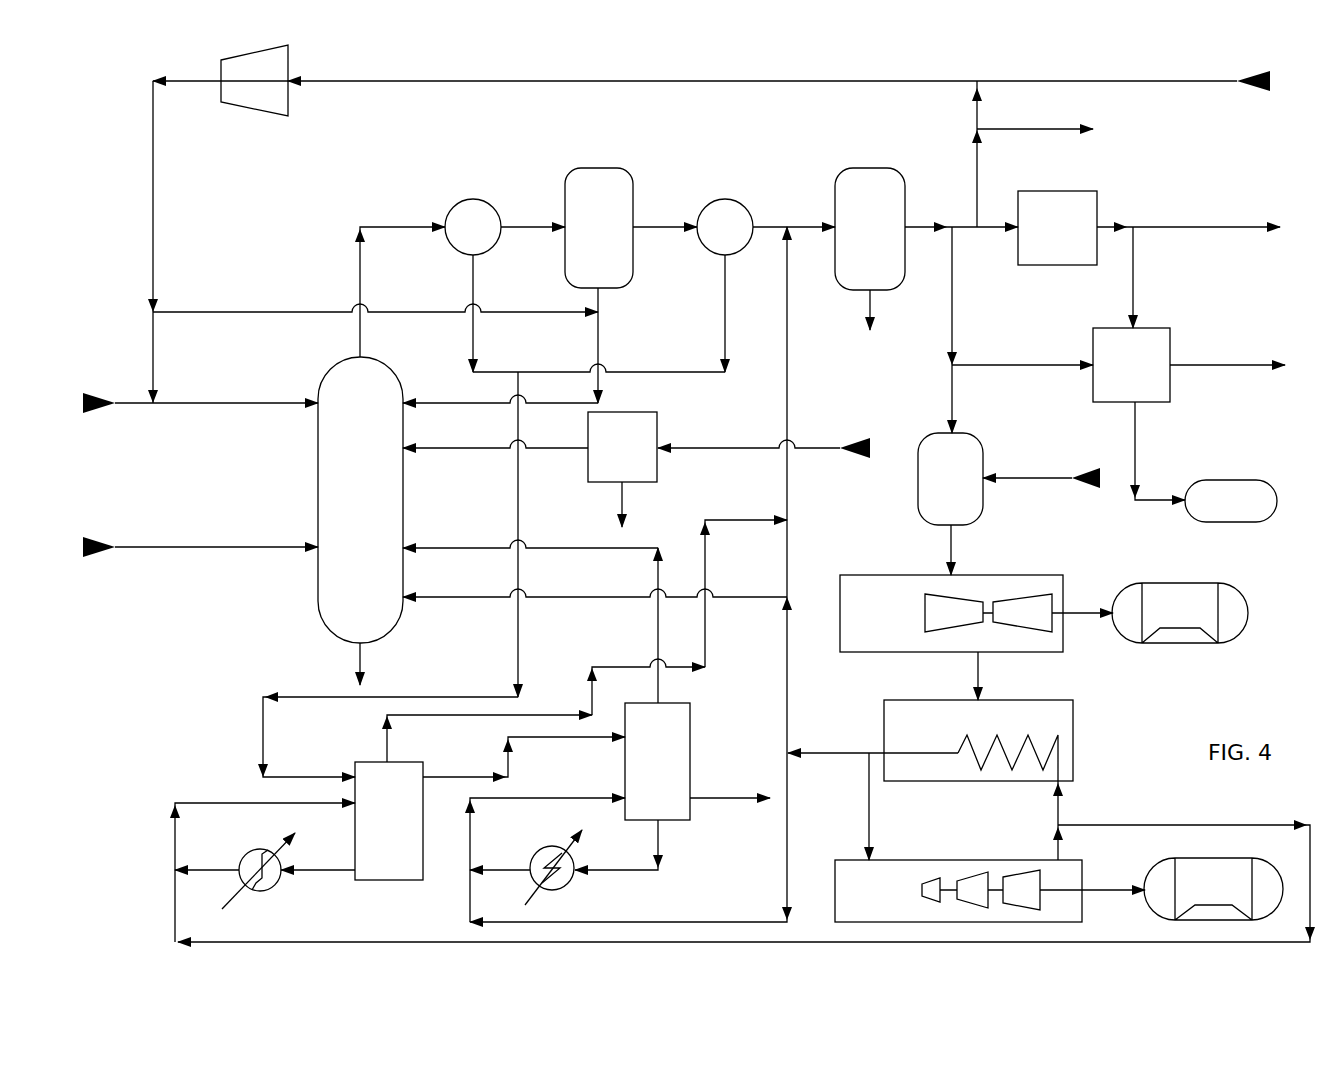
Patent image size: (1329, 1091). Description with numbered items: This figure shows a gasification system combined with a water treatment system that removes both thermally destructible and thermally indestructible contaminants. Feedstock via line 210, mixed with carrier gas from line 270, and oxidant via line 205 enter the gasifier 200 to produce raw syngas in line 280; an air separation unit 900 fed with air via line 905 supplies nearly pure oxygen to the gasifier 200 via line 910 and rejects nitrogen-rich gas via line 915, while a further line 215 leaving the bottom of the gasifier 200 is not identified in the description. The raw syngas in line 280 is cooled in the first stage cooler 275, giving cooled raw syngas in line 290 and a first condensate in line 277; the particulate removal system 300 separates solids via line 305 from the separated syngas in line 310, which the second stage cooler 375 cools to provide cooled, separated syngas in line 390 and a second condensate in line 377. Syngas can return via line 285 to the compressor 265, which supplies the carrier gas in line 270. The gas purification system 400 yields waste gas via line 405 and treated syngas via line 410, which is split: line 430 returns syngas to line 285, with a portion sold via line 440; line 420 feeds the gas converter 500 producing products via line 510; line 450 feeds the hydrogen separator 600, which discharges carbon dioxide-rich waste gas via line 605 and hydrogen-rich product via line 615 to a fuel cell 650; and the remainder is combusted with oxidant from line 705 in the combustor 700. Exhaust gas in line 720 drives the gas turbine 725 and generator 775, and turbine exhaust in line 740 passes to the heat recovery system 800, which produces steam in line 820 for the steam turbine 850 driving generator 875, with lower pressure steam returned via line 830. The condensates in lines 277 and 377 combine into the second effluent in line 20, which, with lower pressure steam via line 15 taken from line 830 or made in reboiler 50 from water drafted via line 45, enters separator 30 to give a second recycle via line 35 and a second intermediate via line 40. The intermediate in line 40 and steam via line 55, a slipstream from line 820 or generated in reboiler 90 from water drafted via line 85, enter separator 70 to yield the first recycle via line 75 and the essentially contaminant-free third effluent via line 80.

The second steam supply line 15 is at (210, 800).
The second effluent line 20 is at (515, 418).
The separator 30 is at (377, 829).
The second recycle line 35 is at (710, 620).
The second intermediate line 40 is at (450, 775).
The water draft line 45 is at (325, 868).
The reboiler 50 is at (283, 888).
The first steam supply line 55 is at (790, 810).
The separator 70 is at (645, 776).
The first recycle line 75 is at (655, 620).
The third effluent line 80 is at (725, 795).
The water draft line 85 is at (665, 835).
The reboiler 90 is at (568, 890).
The gasifier 200 is at (343, 509).
The oxidant line 205 is at (270, 545).
The feedstock line 210 is at (190, 405).
The bottoms stream 215 is at (358, 650).
The compressor 265 is at (238, 89).
The carrier gas line 270 is at (196, 84).
The first stage cooler 275 is at (456, 241).
The first condensate line 277 is at (477, 272).
The raw syngas line 280 is at (355, 275).
The recycle line 285 is at (337, 84).
The cooled raw syngas line 290 is at (528, 226).
The particulate removal system 300 is at (582, 241).
The separated solids line 305 is at (600, 333).
The separated syngas line 310 is at (662, 226).
The second stage cooler 375 is at (708, 241).
The second condensate line 377 is at (724, 290).
The cooled separated syngas line 390 is at (799, 226).
The gas purification system 400 is at (853, 241).
The waste gas line 405 is at (870, 325).
The treated syngas line 410 is at (929, 226).
The gas converter feed line 420 is at (965, 230).
The recycle branch line 430 is at (978, 157).
The commodity syngas line 440 is at (1015, 127).
The hydrogen separator feed line 450 is at (1033, 364).
The gas converter 500 is at (1041, 237).
The product line 510 is at (1204, 226).
The hydrogen separator 600 is at (1115, 379).
The carbon dioxide-rich waste gas line 605 is at (1233, 364).
The hydrogen-rich product line 615 is at (1137, 455).
The fuel cell 650 is at (1214, 512).
The combustor 700 is at (934, 492).
The combustor oxidant line 705 is at (1043, 473).
The exhaust gas line 720 is at (955, 545).
The gas turbine 725 is at (861, 622).
The turbine exhaust line 740 is at (975, 675).
The electric generator 775 is at (1163, 614).
The heat recovery system 800 is at (908, 736).
The steam line 820 is at (752, 595).
The lower pressure steam line 830 is at (1055, 812).
The steam turbine 850 is at (860, 904).
The electric generator 875 is at (1196, 891).
The air separation unit 900 is at (605, 457).
The air line 905 is at (740, 445).
The oxygen line 910 is at (445, 450).
The nitrogen-rich reject gas line 915 is at (628, 498).